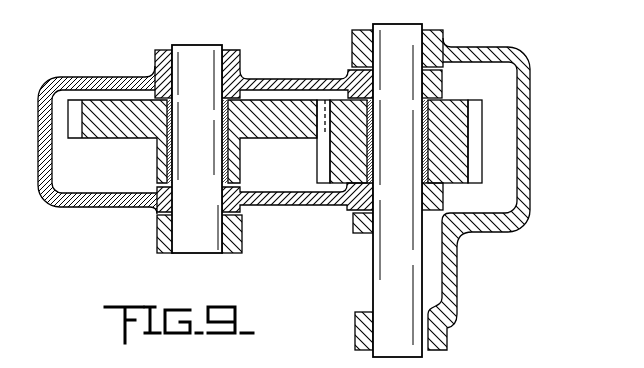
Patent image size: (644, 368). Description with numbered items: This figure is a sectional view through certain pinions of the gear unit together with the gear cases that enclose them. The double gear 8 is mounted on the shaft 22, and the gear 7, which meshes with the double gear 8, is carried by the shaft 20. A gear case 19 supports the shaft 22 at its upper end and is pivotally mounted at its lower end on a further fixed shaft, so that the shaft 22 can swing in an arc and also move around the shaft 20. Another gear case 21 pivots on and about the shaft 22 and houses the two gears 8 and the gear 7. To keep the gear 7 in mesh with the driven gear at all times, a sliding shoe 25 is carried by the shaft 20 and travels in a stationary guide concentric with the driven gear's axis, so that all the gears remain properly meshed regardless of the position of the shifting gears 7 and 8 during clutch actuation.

The gear 7 is at (130, 139).
The double gear 8 is at (483, 138).
The gear case 19 is at (528, 186).
The shaft 20 is at (208, 253).
The gear case 21 is at (70, 202).
The shaft 22 is at (390, 262).
The sliding shoe 25 is at (157, 237).